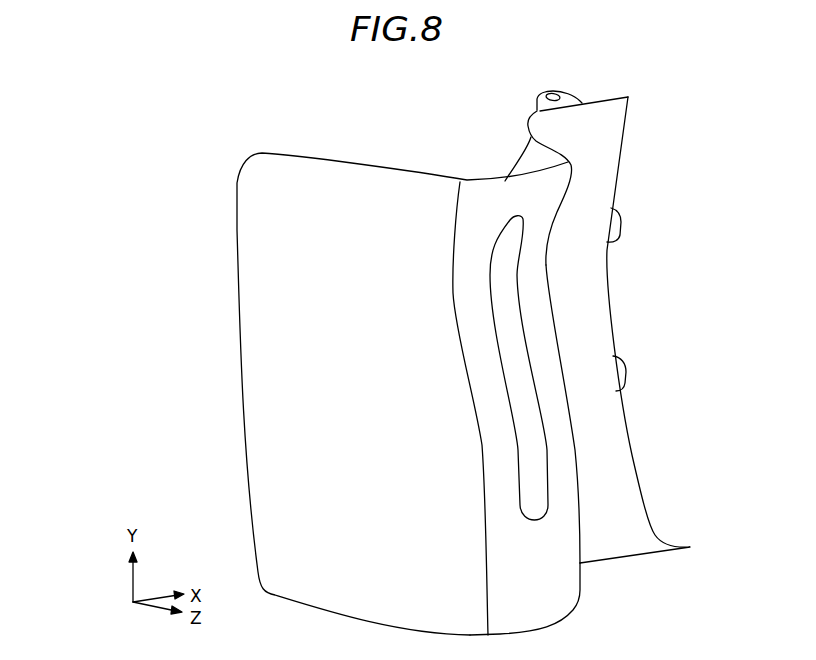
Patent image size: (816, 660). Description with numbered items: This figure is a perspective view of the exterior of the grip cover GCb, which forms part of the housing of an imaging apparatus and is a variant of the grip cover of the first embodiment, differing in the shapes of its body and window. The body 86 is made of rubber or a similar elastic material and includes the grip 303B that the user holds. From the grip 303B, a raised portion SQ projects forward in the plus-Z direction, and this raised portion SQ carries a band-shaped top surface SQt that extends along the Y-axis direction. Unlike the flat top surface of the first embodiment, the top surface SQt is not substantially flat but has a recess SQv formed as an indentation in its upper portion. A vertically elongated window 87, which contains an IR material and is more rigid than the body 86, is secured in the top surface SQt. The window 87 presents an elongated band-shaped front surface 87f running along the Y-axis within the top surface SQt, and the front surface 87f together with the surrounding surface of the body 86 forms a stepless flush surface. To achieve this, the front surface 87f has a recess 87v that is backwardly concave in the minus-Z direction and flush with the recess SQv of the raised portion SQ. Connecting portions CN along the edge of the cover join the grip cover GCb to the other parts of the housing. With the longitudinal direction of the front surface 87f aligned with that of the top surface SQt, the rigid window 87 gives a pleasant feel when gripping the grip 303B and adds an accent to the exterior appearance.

The grip cover GCb is at (205, 108).
The body 86 is at (258, 263).
The grip 303B is at (300, 325).
The window 87 is at (509, 214).
The recess 87v is at (557, 261).
The front surface 87f is at (555, 475).
The raised portion SQ is at (590, 433).
The recess SQv is at (563, 283).
The top surface SQt is at (580, 610).
The connecting portions CN is at (537, 104).